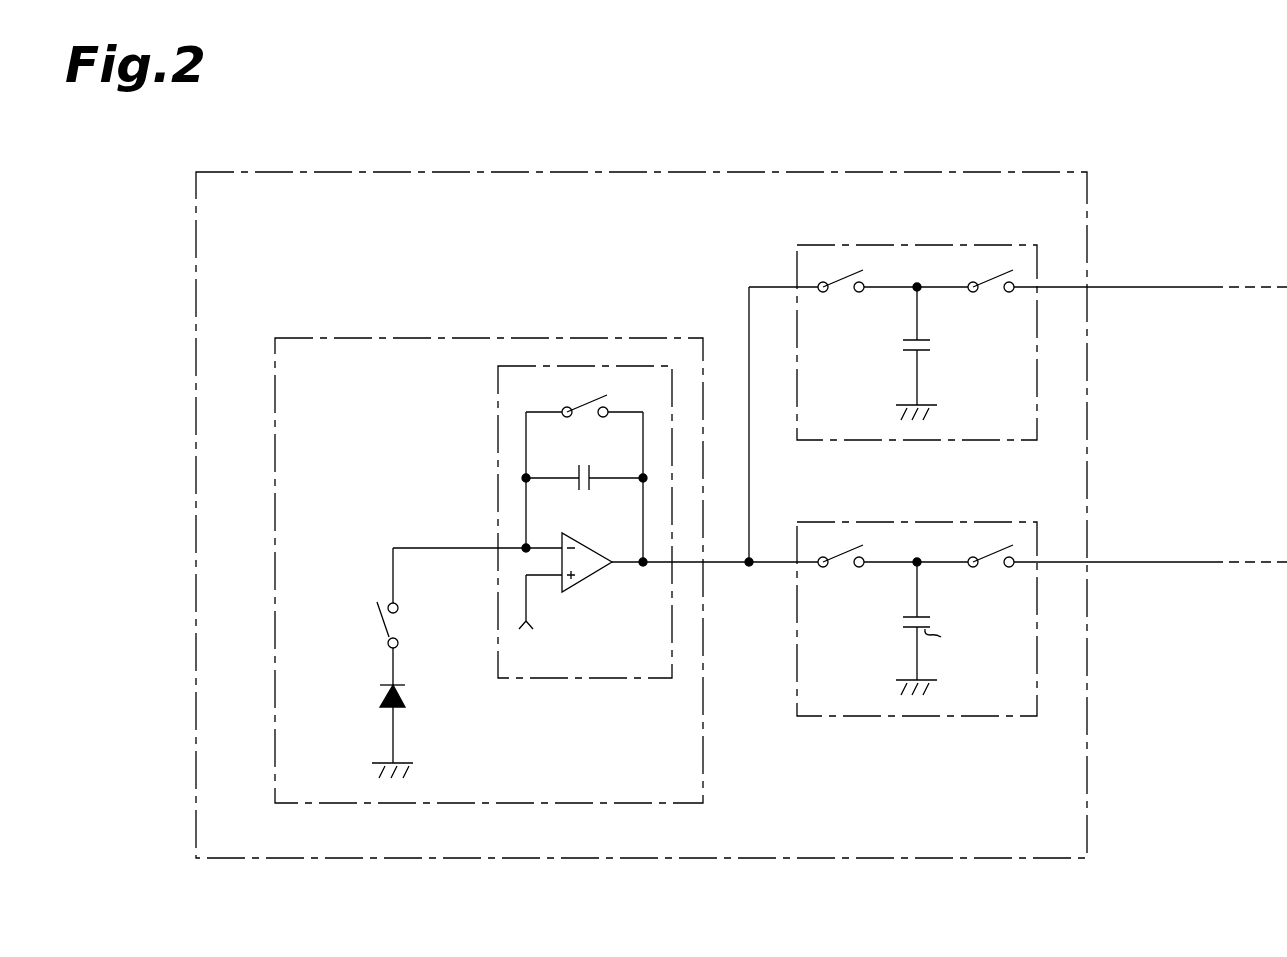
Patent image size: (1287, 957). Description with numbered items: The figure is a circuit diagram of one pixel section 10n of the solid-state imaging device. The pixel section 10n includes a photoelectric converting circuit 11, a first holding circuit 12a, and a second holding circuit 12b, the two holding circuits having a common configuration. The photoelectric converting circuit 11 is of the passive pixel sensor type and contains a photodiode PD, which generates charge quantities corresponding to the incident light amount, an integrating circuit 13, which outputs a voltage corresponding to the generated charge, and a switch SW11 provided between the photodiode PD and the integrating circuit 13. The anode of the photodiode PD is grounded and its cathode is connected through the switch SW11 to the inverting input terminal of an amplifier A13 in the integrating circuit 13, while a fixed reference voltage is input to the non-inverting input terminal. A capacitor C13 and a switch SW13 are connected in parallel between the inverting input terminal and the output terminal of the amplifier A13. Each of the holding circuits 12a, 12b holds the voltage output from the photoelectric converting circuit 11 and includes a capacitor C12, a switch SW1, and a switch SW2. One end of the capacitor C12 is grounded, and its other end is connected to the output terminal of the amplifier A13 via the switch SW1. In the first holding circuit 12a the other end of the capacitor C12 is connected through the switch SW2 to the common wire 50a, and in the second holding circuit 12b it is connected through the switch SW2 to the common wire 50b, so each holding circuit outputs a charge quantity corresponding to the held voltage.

The pixel section 10n is at (1046, 172).
The photoelectric converting circuit 11 is at (640, 338).
The first holding circuit 12a is at (1000, 245).
The second holding circuit 12b is at (998, 716).
The integrating circuit 13 is at (637, 678).
The common wire 50a is at (1166, 288).
The common wire 50b is at (1166, 563).
The switch SW11 is at (380, 627).
The photodiode PD is at (379, 697).
The amplifier A13 is at (586, 583).
The switch SW13 is at (584, 424).
The capacitor C13 is at (578, 489).
The switch SW1 is at (843, 299).
The switch SW2 is at (991, 299).
The capacitor C12 is at (925, 352).